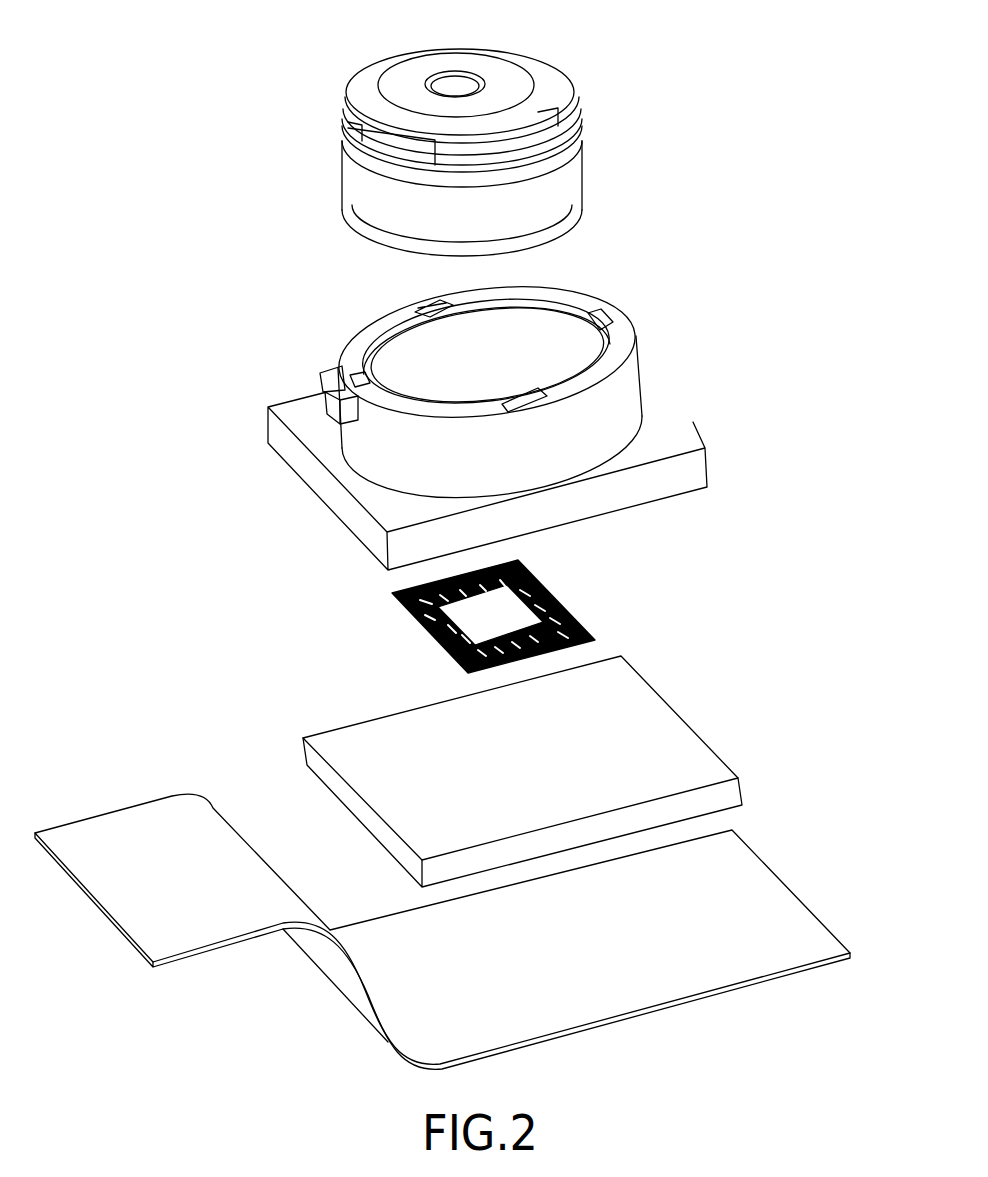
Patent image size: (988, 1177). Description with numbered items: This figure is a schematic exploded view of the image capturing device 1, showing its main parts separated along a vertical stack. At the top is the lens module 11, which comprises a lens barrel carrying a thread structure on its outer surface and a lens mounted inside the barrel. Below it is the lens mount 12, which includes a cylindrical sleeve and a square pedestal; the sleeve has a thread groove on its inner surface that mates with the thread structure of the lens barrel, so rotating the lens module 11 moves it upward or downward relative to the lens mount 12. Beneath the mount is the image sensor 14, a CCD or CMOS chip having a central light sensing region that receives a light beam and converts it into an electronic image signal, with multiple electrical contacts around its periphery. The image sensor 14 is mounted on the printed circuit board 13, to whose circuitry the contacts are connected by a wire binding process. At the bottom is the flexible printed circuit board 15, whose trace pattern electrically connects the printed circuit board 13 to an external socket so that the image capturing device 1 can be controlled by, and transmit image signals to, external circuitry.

The image capturing device 1 is at (865, 72).
The lens module 11 is at (500, 70).
The lens mount 12 is at (615, 405).
The printed circuit board 13 is at (642, 727).
The image sensor 14 is at (552, 590).
The flexible printed circuit board 15 is at (755, 872).